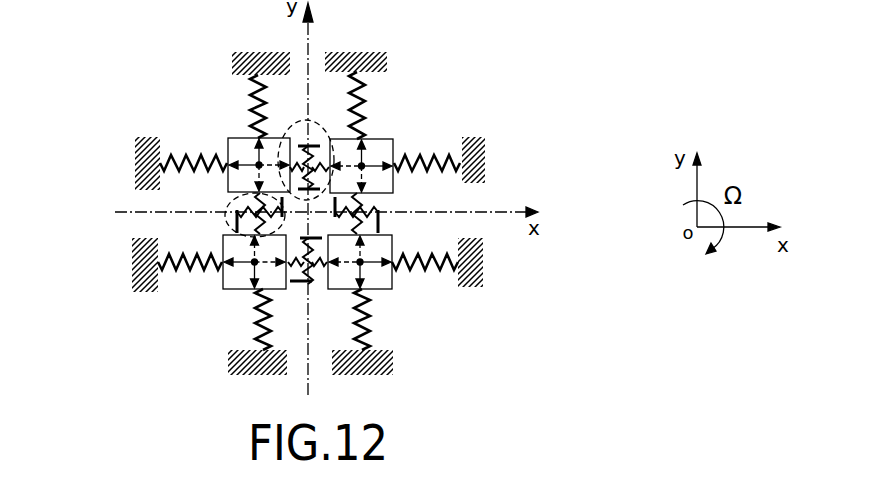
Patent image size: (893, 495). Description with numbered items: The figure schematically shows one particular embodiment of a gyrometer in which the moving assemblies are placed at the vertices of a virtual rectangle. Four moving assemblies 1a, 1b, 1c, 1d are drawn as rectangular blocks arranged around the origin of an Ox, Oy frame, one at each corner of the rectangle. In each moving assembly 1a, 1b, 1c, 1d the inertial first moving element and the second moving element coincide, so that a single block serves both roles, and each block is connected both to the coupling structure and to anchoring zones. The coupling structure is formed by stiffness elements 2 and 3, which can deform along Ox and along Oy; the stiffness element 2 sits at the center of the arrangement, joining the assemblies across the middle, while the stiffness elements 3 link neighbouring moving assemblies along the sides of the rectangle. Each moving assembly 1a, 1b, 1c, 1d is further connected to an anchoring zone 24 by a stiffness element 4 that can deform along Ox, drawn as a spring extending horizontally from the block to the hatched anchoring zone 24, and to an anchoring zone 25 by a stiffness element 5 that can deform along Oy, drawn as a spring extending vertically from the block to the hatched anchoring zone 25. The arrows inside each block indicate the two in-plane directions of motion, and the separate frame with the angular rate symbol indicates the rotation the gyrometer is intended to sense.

The moving assembly 1a is at (238, 145).
The moving assembly 1b is at (388, 143).
The moving assembly 1c is at (378, 278).
The moving assembly 1d is at (233, 282).
The stiffness element 2 is at (317, 122).
The stiffness element 3 is at (228, 204).
The stiffness element 4 is at (185, 160).
The stiffness element 5 is at (248, 98).
The anchoring zone 24 is at (150, 162).
The anchoring zone 25 is at (246, 58).